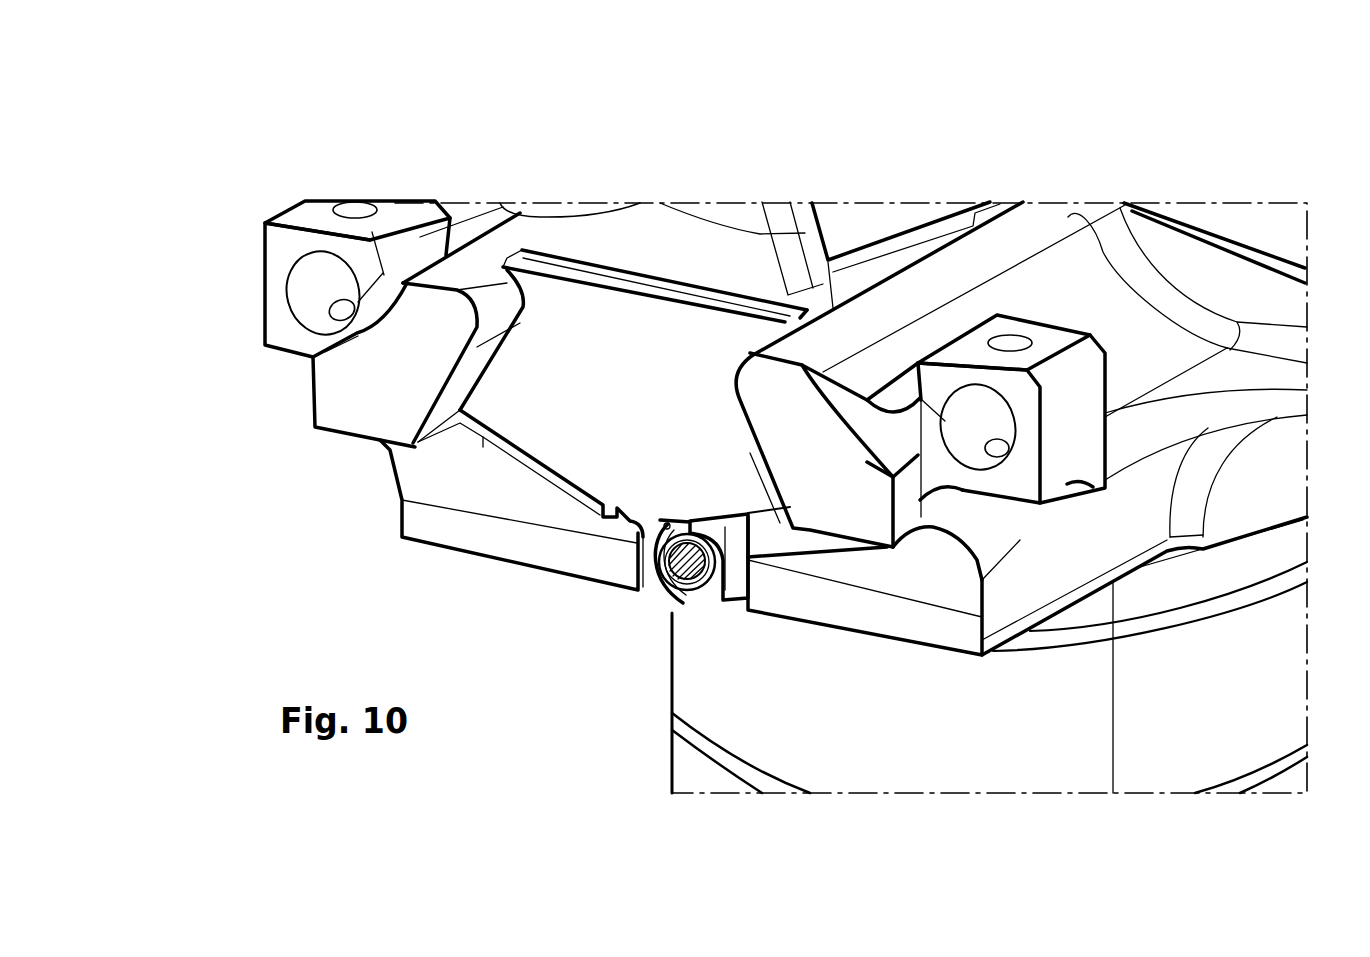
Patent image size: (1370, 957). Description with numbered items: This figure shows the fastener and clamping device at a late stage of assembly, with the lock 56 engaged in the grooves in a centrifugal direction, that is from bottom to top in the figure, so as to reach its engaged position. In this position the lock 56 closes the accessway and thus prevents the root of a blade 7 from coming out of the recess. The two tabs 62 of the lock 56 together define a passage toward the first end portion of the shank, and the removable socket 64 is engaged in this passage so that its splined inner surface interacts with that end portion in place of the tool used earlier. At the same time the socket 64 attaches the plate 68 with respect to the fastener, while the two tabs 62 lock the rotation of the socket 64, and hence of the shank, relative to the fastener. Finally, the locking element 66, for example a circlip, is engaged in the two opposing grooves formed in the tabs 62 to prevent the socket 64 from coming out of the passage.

The blade 7 is at (873, 215).
The lock 56 is at (587, 443).
The tabs 62 is at (737, 582).
The removable socket 64 is at (660, 585).
The locking element 66 is at (698, 598).
The plate 68 is at (625, 305).